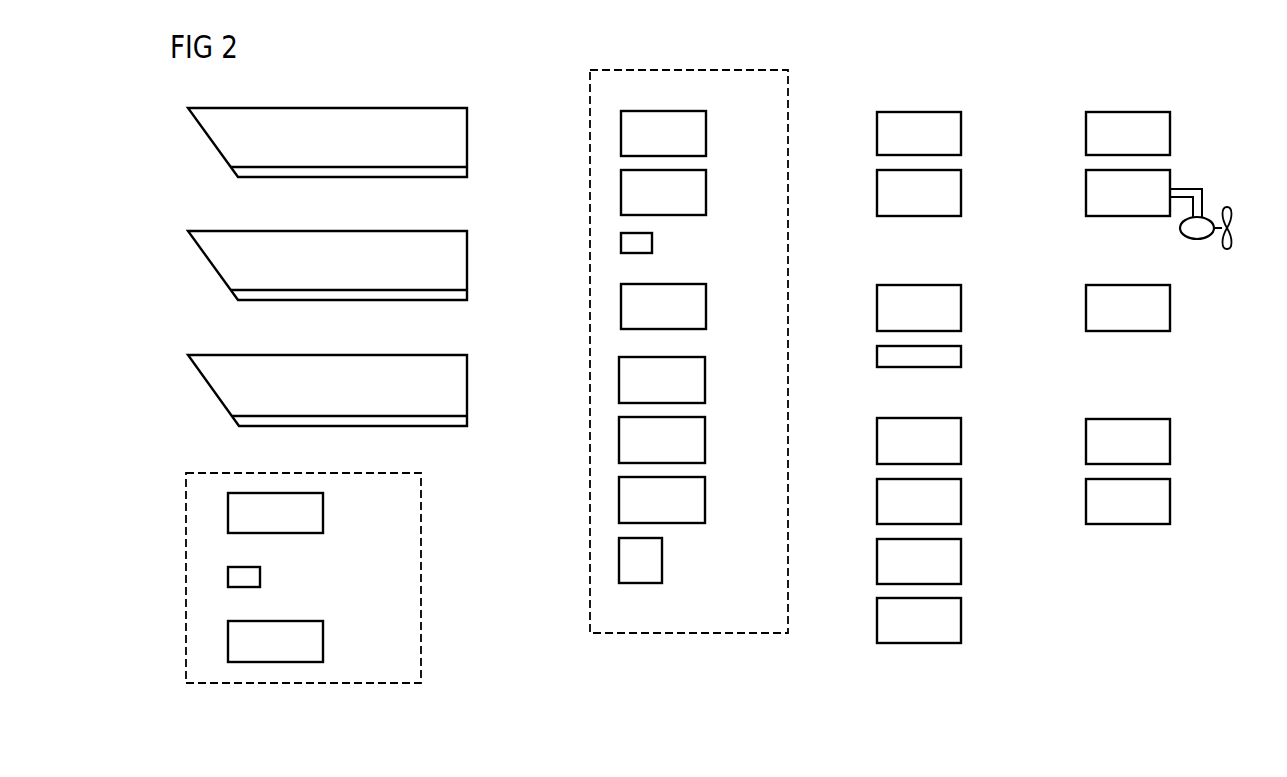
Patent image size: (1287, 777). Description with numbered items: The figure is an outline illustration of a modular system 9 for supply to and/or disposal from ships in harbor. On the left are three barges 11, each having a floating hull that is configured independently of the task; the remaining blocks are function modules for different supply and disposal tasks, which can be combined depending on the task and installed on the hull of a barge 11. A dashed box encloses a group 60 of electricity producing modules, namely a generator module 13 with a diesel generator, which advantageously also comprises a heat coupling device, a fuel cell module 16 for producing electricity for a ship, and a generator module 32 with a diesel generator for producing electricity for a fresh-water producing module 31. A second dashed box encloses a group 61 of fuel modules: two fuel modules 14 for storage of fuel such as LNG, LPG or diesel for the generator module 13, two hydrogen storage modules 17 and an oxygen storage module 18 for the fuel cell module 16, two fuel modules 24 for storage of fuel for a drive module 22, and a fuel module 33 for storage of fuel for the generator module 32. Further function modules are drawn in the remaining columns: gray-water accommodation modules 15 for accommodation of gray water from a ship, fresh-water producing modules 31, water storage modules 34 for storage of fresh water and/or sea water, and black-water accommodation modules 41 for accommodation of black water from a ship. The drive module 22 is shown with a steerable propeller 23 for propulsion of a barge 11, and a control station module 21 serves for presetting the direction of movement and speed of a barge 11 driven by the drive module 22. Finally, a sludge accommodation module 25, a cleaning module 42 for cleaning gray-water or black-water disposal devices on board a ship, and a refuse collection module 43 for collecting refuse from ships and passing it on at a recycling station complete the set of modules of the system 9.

The system 9 is at (1119, 640).
The barge 11 is at (467, 142).
The generator module 13 is at (323, 510).
The fuel module 14 is at (706, 132).
The gray-water accommodation module 15 is at (961, 133).
The fuel cell module 16 is at (323, 640).
The hydrogen storage module 17 is at (706, 305).
The oxygen storage module 18 is at (705, 440).
The control station module 21 is at (1170, 133).
The drive module 22 is at (1170, 175).
The steerable propeller 23 is at (1180, 233).
The fuel module 24 is at (705, 500).
The sludge accommodation module 25 is at (1170, 303).
The fresh-water producing module 31 is at (961, 303).
The generator module 32 is at (260, 575).
The fuel module 33 is at (652, 241).
The water storage module 34 is at (961, 440).
The black-water accommodation module 41 is at (961, 560).
The cleaning module 42 is at (1170, 442).
The refuse collection module 43 is at (1170, 502).
The group of electricity producing modules 60 is at (421, 575).
The group of fuel modules 61 is at (693, 633).